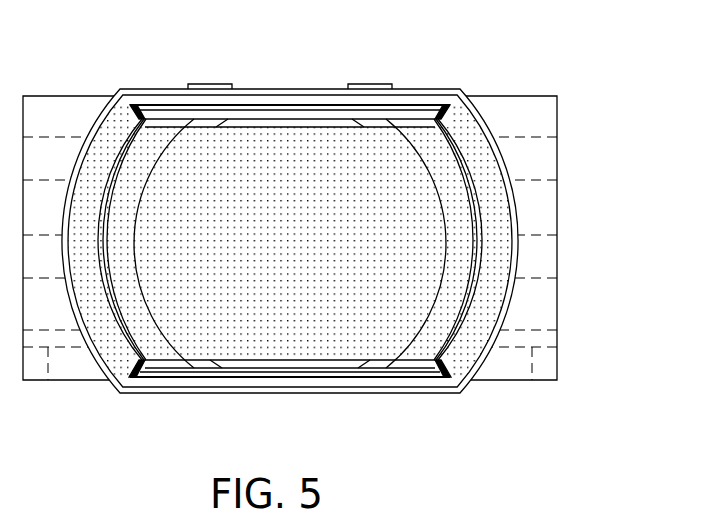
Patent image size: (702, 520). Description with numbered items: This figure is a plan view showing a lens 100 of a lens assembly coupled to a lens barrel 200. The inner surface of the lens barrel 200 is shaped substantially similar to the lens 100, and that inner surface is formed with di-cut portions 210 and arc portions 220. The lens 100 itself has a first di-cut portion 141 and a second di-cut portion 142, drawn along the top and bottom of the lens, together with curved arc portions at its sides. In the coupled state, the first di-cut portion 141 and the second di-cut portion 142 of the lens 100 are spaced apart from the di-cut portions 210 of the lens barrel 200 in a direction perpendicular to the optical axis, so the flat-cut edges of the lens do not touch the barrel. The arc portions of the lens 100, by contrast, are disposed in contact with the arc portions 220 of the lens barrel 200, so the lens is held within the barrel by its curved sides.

The lens 100 is at (392, 325).
The first di-cut portion 141 is at (283, 360).
The second di-cut portion 142 is at (297, 126).
The lens barrel 200 is at (543, 160).
The di-cut portions 210 is at (403, 105).
The arc portions 220 is at (475, 140).